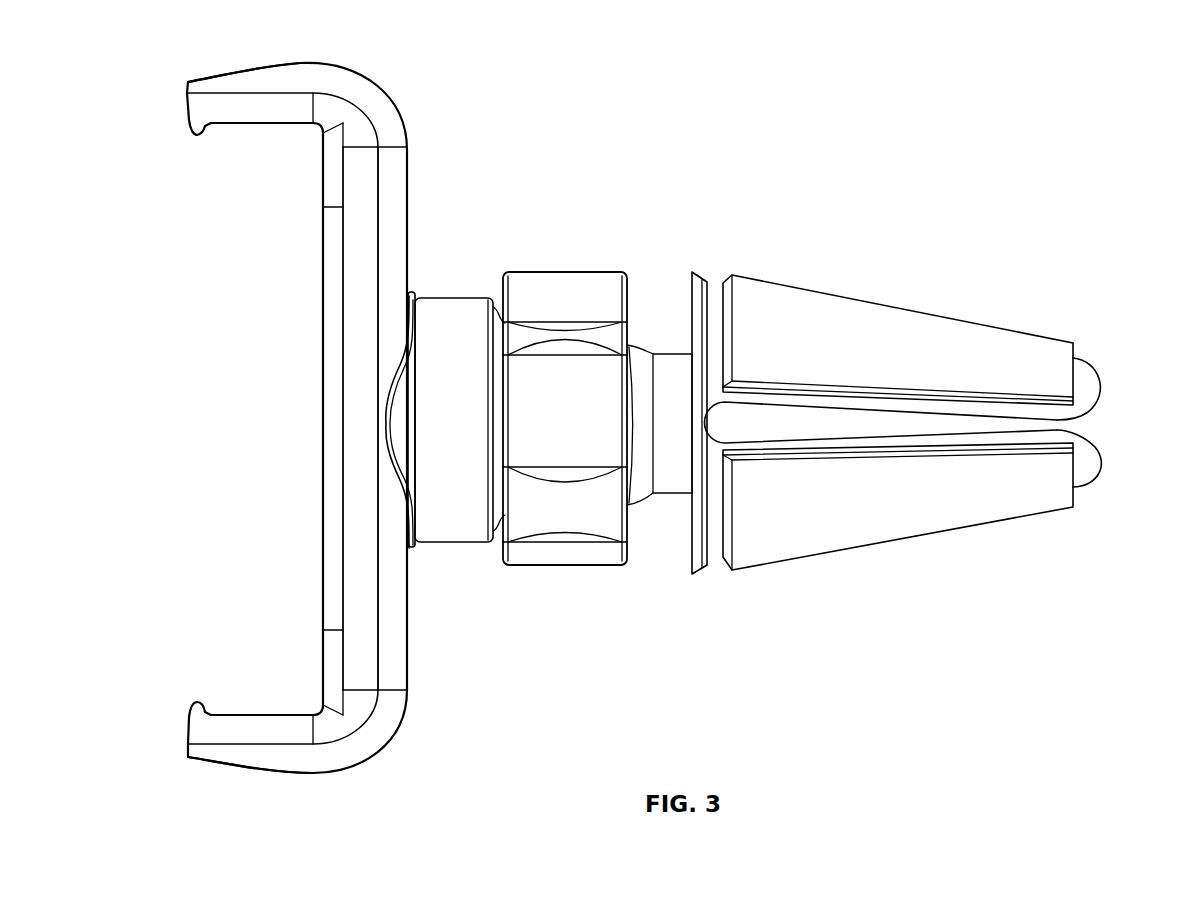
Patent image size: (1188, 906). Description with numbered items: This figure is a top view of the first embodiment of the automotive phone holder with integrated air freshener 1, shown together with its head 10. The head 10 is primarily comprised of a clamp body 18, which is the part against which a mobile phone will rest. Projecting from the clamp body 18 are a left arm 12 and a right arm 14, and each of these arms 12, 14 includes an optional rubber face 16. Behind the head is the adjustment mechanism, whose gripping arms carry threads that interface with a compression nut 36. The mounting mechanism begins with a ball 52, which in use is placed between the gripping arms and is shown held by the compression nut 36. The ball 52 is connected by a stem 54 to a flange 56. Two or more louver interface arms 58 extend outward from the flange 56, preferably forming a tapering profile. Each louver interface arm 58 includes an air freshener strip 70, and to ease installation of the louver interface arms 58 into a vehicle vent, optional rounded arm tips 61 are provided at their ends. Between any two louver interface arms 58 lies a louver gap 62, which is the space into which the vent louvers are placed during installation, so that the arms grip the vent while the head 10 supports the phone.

The automotive phone holder with integrated air freshener 1 is at (697, 61).
The head 10 is at (344, 45).
The left arm 12 is at (236, 84).
The right arm 14 is at (297, 767).
The rubber face 16 is at (264, 108).
The clamp body 18 is at (361, 418).
The compression nut 36 is at (581, 292).
The ball 52 is at (640, 362).
The stem 54 is at (675, 480).
The flange 56 is at (693, 564).
The louver interface arm 58 is at (710, 292).
The rounded arm tip 61 is at (1088, 388).
The louver gap 62 is at (881, 422).
The air freshener strip 70 is at (898, 422).